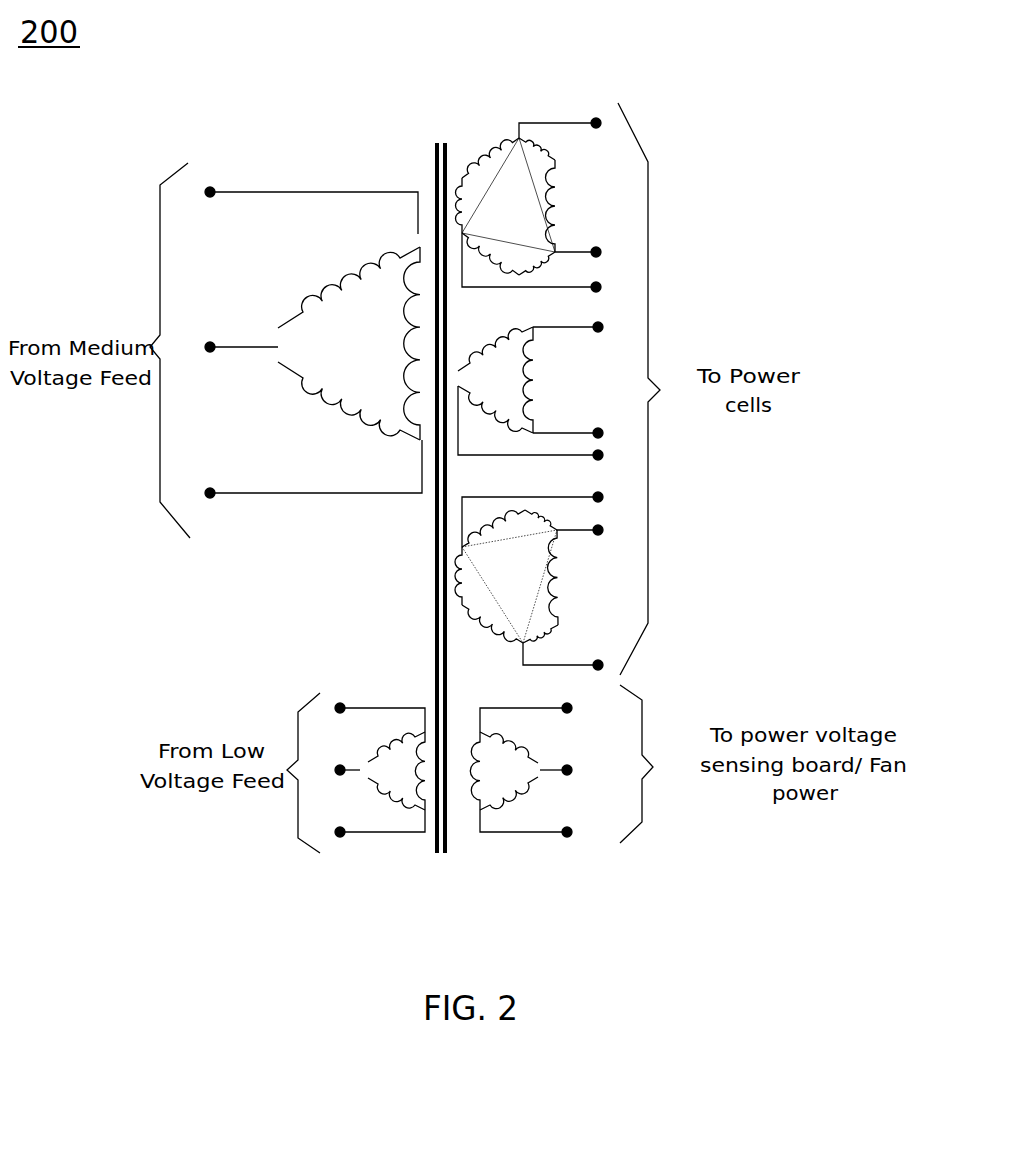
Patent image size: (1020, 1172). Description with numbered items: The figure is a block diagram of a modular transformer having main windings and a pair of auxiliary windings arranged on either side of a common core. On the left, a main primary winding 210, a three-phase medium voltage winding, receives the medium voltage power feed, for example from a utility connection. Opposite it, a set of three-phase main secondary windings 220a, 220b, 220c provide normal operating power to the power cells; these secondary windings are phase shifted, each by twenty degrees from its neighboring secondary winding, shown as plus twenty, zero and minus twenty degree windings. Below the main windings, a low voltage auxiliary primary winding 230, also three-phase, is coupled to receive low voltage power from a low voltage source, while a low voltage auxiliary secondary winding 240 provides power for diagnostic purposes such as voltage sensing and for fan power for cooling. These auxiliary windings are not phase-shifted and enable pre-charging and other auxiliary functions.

The main primary winding 210 is at (250, 532).
The main secondary winding 220a is at (577, 192).
The main secondary winding 220b is at (577, 388).
The main secondary winding 220c is at (578, 585).
The low voltage auxiliary primary winding 230 is at (280, 818).
The low voltage auxiliary secondary winding 240 is at (580, 798).